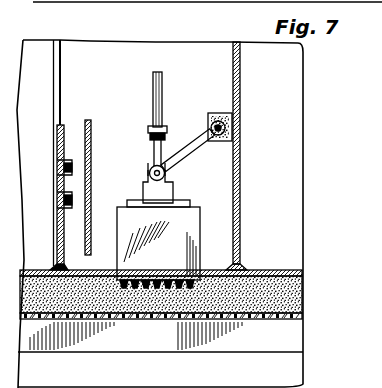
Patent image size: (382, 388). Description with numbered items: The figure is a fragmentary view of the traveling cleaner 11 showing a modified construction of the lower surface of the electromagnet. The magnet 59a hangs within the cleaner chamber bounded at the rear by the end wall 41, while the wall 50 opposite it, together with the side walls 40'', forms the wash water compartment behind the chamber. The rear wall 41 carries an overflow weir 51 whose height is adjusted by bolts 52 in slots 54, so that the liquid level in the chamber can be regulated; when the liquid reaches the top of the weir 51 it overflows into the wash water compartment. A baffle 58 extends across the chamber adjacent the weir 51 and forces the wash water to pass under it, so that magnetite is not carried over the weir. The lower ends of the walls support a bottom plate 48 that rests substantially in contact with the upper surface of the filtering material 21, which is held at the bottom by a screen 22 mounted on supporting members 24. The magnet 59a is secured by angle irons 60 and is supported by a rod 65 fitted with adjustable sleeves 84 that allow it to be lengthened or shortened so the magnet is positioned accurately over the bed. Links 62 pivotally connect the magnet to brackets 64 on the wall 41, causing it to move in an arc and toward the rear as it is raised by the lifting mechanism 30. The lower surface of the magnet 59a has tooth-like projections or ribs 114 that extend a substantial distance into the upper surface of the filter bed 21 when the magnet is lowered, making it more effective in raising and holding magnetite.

The traveling cleaner 11 is at (242, 40).
The side walls 40'' is at (103, 200).
The end wall 41 is at (240, 70).
The wall 50 is at (61, 67).
The overflow weir 51 is at (64, 128).
The baffle 58 is at (91, 124).
The bolts 52 is at (70, 168).
The slots 54 is at (70, 199).
The drive assembly 30 is at (167, 130).
The rod 65 is at (163, 80).
The adjustable sleeves 84 is at (151, 148).
The links 62 is at (188, 143).
The brackets 64 is at (216, 113).
The angle irons 60 is at (174, 190).
The magnet 59a is at (158, 244).
The bottom plate 48 is at (35, 268).
The filtering material 21 is at (290, 298).
The screen 22 is at (281, 318).
The supporting members 24 is at (291, 349).
The projections 114 is at (195, 318).